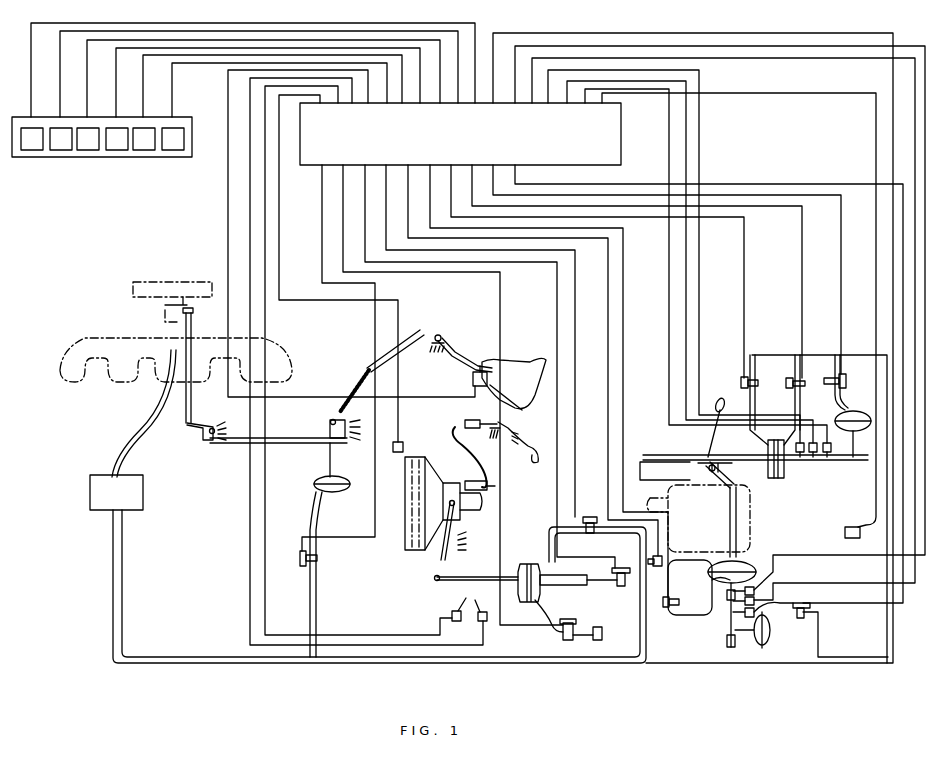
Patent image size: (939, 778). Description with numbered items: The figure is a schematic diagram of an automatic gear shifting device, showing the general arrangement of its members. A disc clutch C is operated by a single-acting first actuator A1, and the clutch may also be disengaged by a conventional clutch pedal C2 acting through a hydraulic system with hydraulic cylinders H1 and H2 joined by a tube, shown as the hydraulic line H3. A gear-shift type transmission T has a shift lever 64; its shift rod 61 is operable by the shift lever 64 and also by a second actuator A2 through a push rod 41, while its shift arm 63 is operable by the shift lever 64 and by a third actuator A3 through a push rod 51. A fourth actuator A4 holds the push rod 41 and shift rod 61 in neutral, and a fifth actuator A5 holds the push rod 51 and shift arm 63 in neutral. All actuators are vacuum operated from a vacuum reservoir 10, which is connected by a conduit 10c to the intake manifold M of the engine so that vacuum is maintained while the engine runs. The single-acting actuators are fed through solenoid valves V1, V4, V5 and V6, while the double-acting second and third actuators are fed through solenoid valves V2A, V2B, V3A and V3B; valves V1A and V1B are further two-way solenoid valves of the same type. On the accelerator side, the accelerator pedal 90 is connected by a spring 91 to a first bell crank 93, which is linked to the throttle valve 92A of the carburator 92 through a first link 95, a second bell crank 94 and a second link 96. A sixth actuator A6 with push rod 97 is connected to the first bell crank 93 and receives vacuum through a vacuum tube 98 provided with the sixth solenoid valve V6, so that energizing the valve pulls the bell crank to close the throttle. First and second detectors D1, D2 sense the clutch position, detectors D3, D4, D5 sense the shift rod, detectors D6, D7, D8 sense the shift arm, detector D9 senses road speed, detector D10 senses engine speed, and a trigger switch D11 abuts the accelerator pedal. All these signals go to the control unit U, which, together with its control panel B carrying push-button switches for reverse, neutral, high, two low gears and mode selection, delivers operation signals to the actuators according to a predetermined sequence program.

The control panel B is at (88, 157).
The control unit U is at (621, 135).
The intake manifold M is at (70, 348).
The vacuum reservoir 10 is at (90, 492).
The conduit 10c is at (130, 445).
The push rod 41 is at (665, 453).
The push rod 51 is at (732, 534).
The shift rod 61 is at (676, 466).
The shift arm 63 is at (724, 482).
The shift lever 64 is at (700, 440).
The accelerator pedal 90 is at (464, 362).
The spring 91 is at (350, 378).
The carburator 92 is at (165, 320).
The throttle valve 92A is at (165, 305).
The first bell crank 93 is at (345, 418).
The second bell crank 94 is at (213, 424).
The first link 95 is at (285, 448).
The second link 96 is at (192, 397).
The push rod 97 is at (331, 460).
The vacuum tube 98 is at (307, 512).
The first actuator A1 is at (518, 565).
The second actuator A2 is at (776, 480).
The third actuator A3 is at (760, 550).
The fourth actuator A4 is at (818, 509).
The fifth actuator A5 is at (770, 633).
The sixth actuator A6 is at (338, 494).
The disc clutch C is at (440, 478).
The clutch pedal C2 is at (534, 446).
The hydraulic cylinder H1 is at (468, 420).
The hydraulic cylinder H2 is at (495, 490).
The hydraulic line H3 is at (478, 470).
The gear-shift type transmission T is at (748, 465).
The first detector D1 is at (365, 360).
The second detector D2 is at (374, 361).
The third detector D3 is at (802, 460).
The fourth detector D4 is at (815, 460).
The fifth detector D5 is at (829, 460).
The sixth detector D6 is at (720, 320).
The seventh detector D7 is at (723, 332).
The eighth detector D8 is at (766, 615).
The ninth detector D9 is at (739, 315).
The tenth detector D10 is at (403, 444).
The trigger switch D11 is at (357, 233).
The first solenoid valve V1 is at (492, 349).
The solenoid valve V1A is at (498, 384).
The solenoid valve V1B is at (573, 622).
The second A solenoid valve V2A is at (604, 276).
The second B solenoid valve V2B is at (638, 276).
The third A solenoid valve V3A is at (535, 365).
The third B solenoid valve V3B is at (580, 390).
The fourth solenoid valve V4 is at (679, 276).
The fifth solenoid valve V5 is at (709, 411).
The sixth solenoid valve V6 is at (325, 366).